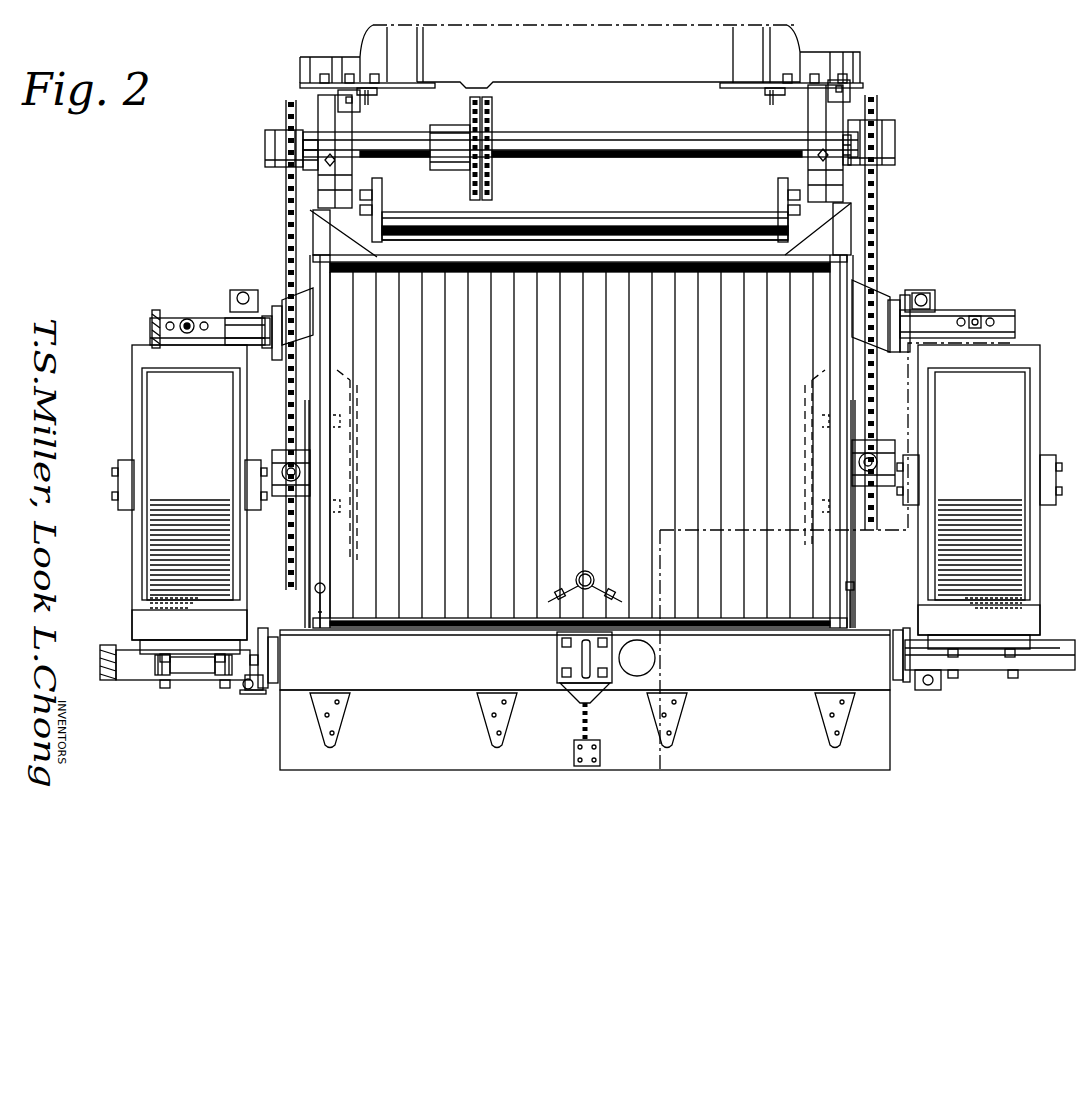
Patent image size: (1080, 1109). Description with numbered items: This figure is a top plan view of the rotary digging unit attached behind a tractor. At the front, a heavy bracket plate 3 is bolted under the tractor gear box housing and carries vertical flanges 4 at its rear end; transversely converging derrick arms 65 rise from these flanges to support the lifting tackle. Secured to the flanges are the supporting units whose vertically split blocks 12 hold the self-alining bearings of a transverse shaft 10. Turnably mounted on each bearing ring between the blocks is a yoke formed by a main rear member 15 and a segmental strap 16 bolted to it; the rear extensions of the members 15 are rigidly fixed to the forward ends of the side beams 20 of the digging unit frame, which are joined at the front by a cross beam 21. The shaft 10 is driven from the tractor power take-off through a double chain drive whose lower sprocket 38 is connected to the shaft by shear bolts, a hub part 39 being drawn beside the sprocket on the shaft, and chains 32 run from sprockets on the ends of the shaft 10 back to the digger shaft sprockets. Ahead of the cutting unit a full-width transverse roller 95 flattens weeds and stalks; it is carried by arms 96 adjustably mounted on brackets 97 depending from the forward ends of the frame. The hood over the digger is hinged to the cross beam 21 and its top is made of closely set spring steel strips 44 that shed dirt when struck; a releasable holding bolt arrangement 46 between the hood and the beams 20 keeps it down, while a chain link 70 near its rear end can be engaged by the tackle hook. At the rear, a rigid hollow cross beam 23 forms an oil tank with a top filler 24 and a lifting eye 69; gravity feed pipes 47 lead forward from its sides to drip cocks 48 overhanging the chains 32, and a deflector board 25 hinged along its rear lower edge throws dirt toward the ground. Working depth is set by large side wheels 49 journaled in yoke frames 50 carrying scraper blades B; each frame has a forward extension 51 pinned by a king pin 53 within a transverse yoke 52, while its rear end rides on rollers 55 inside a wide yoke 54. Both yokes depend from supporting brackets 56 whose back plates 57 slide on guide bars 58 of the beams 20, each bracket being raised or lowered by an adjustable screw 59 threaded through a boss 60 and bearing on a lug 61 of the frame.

The bracket plate 3 is at (651, 70).
The vertical flanges 4 is at (410, 88).
The derrick arms 65 is at (383, 97).
The transverse shaft 10 is at (598, 148).
The hub 39 is at (457, 170).
The lower sprocket 38 is at (494, 112).
The blocks 12 is at (330, 118).
The segmental strap 16 is at (278, 172).
The main rear member 15 is at (326, 200).
The chains 32 is at (298, 195).
The drip cocks 48 is at (876, 450).
The arms 96 is at (384, 195).
The transverse roller 95 is at (640, 220).
The cross beam 21 is at (690, 240).
The brackets 97 is at (357, 213).
The side beams 20 is at (313, 378).
The longitudinally extending strips 44 is at (415, 585).
The chain link 70 is at (585, 574).
The hollow cross beam 23 is at (735, 690).
The deflector board 25 is at (425, 740).
The eye 69 is at (582, 655).
The top filler 24 is at (640, 668).
The holding bolt arrangement 46 is at (324, 594).
The gravity feed pipes 47 is at (305, 530).
The side wheels 49 is at (168, 446).
The yoke frames 50 is at (134, 541).
The scraper blades B is at (150, 600).
The extension 51 is at (175, 345).
The yoke 52 is at (160, 312).
The king pin 53 is at (188, 320).
The supporting brackets 56 is at (240, 330).
The back plate 57 is at (268, 332).
The guide bars 58 is at (280, 332).
The adjustable screw 59 is at (244, 296).
The boss 60 is at (935, 302).
The lug 61 is at (256, 690).
The yoke 54 is at (108, 680).
The rollers 55 is at (216, 660).